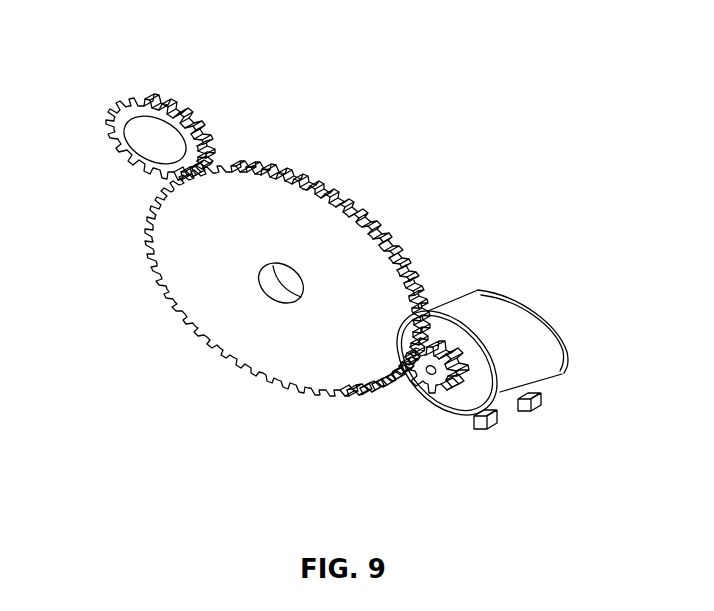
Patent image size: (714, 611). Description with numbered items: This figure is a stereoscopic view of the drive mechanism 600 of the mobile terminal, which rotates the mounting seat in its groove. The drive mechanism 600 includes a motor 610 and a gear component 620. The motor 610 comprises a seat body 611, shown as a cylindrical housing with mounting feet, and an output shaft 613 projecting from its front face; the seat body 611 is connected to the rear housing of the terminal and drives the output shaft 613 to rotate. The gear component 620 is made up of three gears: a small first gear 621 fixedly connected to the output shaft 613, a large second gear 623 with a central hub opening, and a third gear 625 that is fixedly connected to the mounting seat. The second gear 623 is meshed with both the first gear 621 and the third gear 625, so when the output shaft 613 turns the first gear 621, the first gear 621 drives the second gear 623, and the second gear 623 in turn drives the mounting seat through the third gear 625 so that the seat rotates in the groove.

The drive mechanism 600 is at (217, 113).
The motor 610 is at (515, 358).
The seat body 611 is at (503, 400).
The output shaft 613 is at (428, 372).
The gear component 620 is at (395, 242).
The first gear 621 is at (427, 394).
The second gear 623 is at (343, 202).
The third gear 625 is at (150, 131).